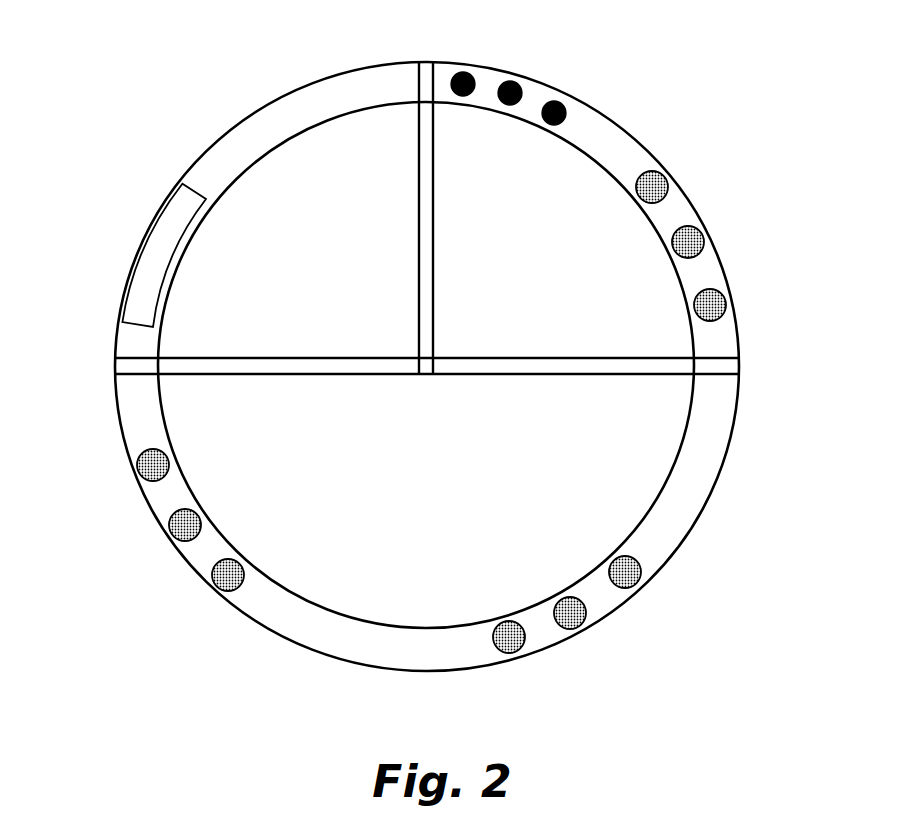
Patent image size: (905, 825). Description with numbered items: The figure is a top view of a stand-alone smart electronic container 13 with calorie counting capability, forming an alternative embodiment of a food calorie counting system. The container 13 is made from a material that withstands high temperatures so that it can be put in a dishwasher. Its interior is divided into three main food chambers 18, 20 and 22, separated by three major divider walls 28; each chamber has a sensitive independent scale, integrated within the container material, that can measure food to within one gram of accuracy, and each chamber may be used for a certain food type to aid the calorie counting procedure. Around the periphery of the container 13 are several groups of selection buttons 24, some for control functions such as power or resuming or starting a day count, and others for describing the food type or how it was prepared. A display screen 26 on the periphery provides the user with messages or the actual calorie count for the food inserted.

The electronic container 13 is at (150, 79).
The food chamber 18 is at (283, 265).
The food chamber 20 is at (540, 265).
The food chamber 22 is at (417, 503).
The selection buttons 24 is at (449, 34).
The display screen 26 is at (145, 250).
The divider walls 28 is at (305, 375).